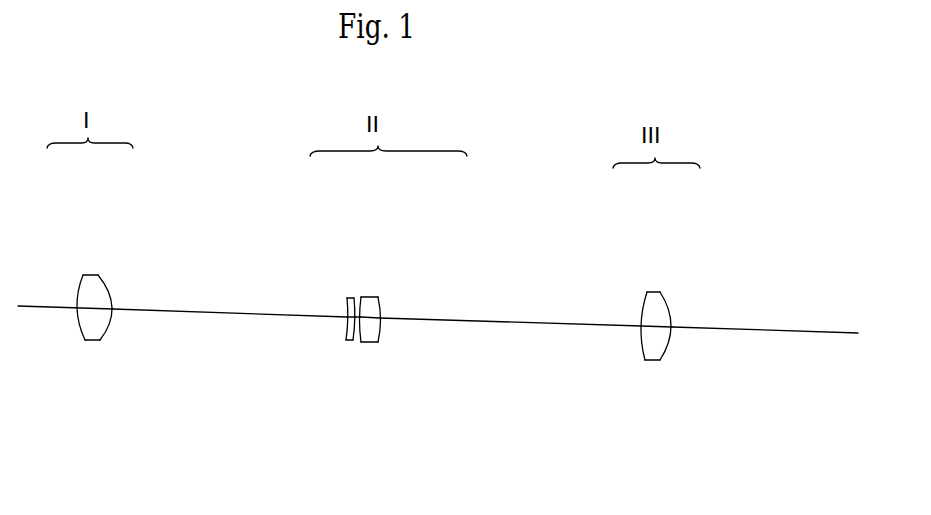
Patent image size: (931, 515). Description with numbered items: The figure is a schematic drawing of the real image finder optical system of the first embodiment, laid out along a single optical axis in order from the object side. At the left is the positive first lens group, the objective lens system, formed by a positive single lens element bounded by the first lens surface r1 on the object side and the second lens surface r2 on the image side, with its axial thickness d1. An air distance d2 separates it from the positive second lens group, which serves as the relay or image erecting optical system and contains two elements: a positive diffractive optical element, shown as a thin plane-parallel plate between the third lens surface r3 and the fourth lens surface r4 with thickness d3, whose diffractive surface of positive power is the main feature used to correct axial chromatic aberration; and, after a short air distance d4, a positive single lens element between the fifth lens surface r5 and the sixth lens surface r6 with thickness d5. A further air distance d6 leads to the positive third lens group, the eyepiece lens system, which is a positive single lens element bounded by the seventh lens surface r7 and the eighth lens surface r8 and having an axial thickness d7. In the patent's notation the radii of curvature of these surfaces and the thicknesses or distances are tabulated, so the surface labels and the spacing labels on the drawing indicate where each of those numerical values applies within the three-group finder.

The first lens surface r1 is at (82, 275).
The second lens surface r2 is at (98, 275).
The third lens surface r3 is at (348, 298).
The fourth lens surface r4 is at (355, 298).
The fifth lens surface r5 is at (364, 297).
The sixth lens surface r6 is at (382, 297).
The seventh lens surface r7 is at (646, 292).
The eighth lens surface r8 is at (660, 292).
The first lens thickness d1 is at (92, 310).
The first air distance d2 is at (230, 313).
The diffractive element thickness d3 is at (349, 340).
The second air distance d4 is at (358, 320).
The second lens thickness d5 is at (373, 342).
The third air distance d6 is at (512, 322).
The third lens thickness d7 is at (655, 328).